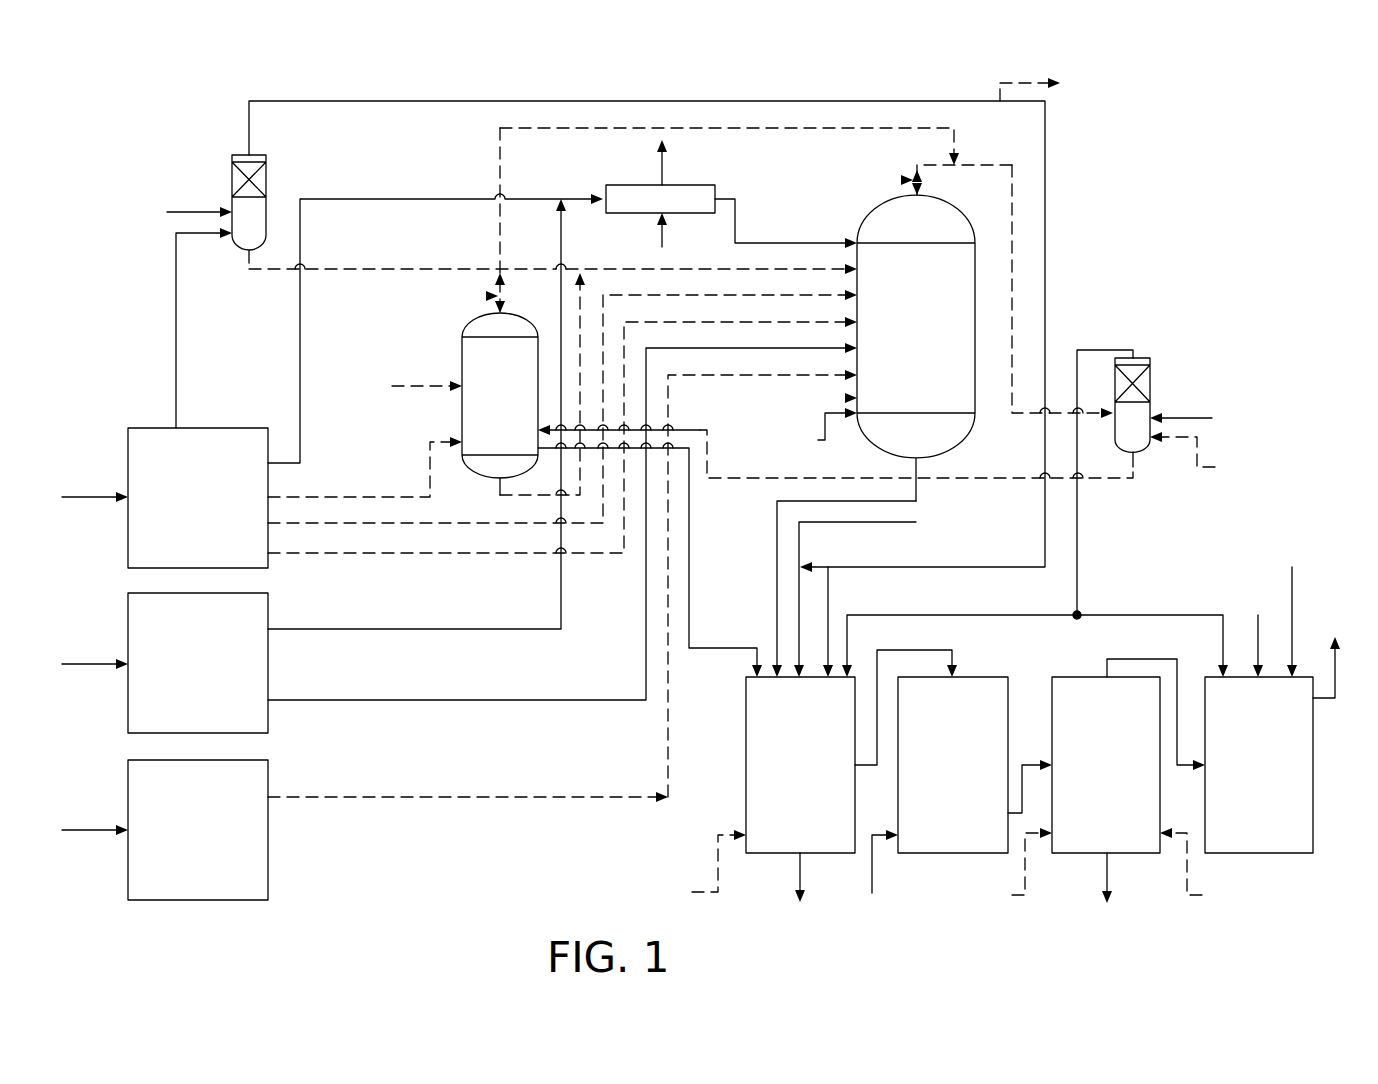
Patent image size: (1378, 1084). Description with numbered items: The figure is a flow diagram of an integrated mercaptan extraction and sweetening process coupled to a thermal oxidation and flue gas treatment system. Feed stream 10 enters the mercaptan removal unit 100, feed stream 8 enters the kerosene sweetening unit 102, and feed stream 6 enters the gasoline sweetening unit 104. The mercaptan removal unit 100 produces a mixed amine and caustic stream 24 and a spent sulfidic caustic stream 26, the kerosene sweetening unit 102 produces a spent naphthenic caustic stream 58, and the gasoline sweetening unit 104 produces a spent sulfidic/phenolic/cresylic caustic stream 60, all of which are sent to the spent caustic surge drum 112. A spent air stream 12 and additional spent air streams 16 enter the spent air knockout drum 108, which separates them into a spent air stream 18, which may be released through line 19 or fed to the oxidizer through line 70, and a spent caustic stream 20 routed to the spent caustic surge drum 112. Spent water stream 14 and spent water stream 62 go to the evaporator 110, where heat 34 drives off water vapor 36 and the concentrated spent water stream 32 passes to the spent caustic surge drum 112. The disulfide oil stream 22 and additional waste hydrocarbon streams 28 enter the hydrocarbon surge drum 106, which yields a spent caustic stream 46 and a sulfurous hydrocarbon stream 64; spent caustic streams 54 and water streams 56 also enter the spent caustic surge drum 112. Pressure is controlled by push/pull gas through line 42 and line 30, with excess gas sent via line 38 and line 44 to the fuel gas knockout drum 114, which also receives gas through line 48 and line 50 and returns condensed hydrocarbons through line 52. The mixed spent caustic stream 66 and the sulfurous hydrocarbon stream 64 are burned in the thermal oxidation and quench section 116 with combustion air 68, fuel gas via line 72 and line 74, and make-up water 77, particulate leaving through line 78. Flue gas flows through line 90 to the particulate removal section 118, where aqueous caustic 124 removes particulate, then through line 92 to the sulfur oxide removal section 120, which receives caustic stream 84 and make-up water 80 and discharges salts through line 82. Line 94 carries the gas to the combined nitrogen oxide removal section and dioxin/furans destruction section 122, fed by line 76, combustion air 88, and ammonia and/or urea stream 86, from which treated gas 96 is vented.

The feed stream 6 is at (83, 830).
The feed stream 8 is at (83, 664).
The feed stream 10 is at (73, 497).
The spent air stream 12 is at (178, 345).
The spent water stream 14 is at (301, 333).
The additional spent air streams 16 is at (185, 212).
The spent air stream 18 is at (316, 101).
The line 19 is at (1000, 83).
The spent caustic stream 20 is at (340, 269).
The disulfide oil stream 22 is at (430, 442).
The mixed amine and caustic stream 24 is at (790, 295).
The spent sulfidic caustic stream 26 is at (742, 322).
The additional waste hydrocarbon streams 28 is at (392, 386).
The line 30 is at (486, 296).
The concentrated spent water stream 32 is at (762, 243).
The heat 34 is at (664, 240).
The water vapor 36 is at (664, 167).
The line 38 is at (502, 175).
The line 42 is at (901, 180).
The line 44 is at (1013, 247).
The spent caustic stream 46 is at (500, 490).
The line 48 is at (1212, 418).
The line 50 is at (1218, 467).
The line 52 is at (680, 430).
The spent caustic streams 54 is at (845, 398).
The water streams 56 is at (818, 440).
The spent naphthenic caustic stream 58 is at (803, 348).
The spent sulfidic/phenolic/cresylic caustic stream 60 is at (700, 375).
The spent water stream 62 is at (563, 232).
The sulfurous hydrocarbon stream 64 is at (722, 648).
The mixed spent caustic stream 66 is at (777, 535).
The combustion air 68 is at (900, 522).
The line 70 is at (830, 592).
The line 72 is at (1080, 545).
The line 74 is at (955, 615).
The line 76 is at (1160, 615).
The make-up water 77 is at (692, 892).
The line 78 is at (790, 868).
The make-up water 80 is at (1012, 895).
The line 82 is at (1107, 866).
The caustic stream 84 is at (1187, 895).
The ammonia and/or urea stream 86 is at (1258, 614).
The combustion air 88 is at (1293, 582).
The line 90 is at (922, 650).
The line 92 is at (1022, 760).
The line 94 is at (1145, 659).
The treated gas 96 is at (1335, 660).
The mercaptan removal unit 100 is at (138, 428).
The kerosene sweetening unit 102 is at (255, 593).
The gasoline sweetening unit 104 is at (260, 760).
The hydrocarbon surge drum 106 is at (540, 296).
The spent air knockout drum 108 is at (233, 160).
The evaporator 110 is at (628, 185).
The spent caustic surge drum 112 is at (862, 222).
The fuel gas knockout drum 114 is at (1140, 358).
The thermal oxidation and quench section 116 is at (746, 765).
The particulate removal section 118 is at (980, 677).
The sulfur oxide removal section 120 is at (1083, 677).
The combined nitrogen oxide removal section and dioxin/furans destruction section 122 is at (1260, 853).
The aqueous caustic 124 is at (872, 880).